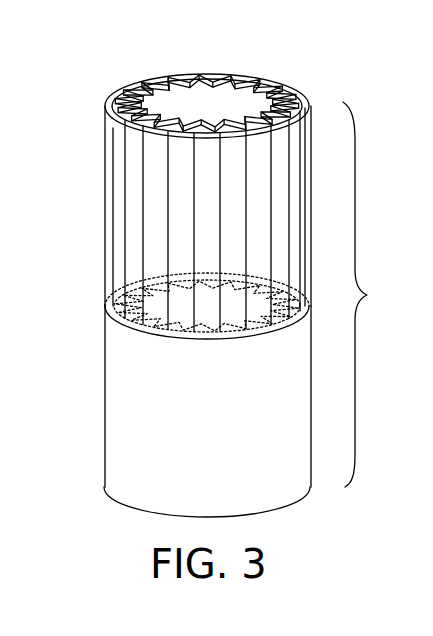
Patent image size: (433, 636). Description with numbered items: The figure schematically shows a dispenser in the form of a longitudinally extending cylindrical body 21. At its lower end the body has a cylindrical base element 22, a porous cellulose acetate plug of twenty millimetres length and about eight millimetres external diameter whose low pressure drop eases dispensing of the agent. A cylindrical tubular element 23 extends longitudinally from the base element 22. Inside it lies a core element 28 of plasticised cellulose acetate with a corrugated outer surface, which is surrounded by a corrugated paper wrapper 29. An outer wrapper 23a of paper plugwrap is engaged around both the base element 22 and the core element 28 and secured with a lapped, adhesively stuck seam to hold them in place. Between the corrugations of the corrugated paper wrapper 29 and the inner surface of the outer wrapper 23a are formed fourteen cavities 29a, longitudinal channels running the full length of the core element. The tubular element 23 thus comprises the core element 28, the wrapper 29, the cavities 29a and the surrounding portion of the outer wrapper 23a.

The cylindrical body 21 is at (370, 294).
The cylindrical base element 22 is at (118, 437).
The cylindrical tubular element 23 is at (89, 255).
The outer wrapper 23a is at (300, 93).
The core element 28 is at (235, 97).
The corrugated paper wrapper 29 is at (197, 81).
The cavities 29a is at (115, 98).